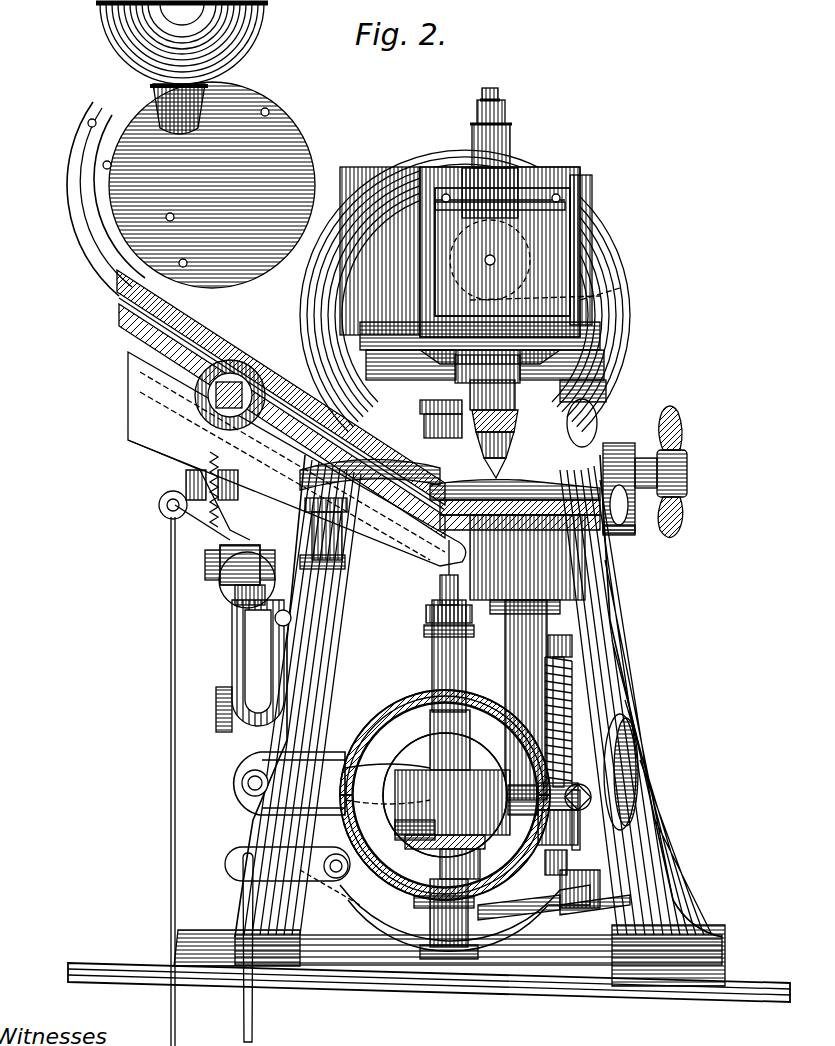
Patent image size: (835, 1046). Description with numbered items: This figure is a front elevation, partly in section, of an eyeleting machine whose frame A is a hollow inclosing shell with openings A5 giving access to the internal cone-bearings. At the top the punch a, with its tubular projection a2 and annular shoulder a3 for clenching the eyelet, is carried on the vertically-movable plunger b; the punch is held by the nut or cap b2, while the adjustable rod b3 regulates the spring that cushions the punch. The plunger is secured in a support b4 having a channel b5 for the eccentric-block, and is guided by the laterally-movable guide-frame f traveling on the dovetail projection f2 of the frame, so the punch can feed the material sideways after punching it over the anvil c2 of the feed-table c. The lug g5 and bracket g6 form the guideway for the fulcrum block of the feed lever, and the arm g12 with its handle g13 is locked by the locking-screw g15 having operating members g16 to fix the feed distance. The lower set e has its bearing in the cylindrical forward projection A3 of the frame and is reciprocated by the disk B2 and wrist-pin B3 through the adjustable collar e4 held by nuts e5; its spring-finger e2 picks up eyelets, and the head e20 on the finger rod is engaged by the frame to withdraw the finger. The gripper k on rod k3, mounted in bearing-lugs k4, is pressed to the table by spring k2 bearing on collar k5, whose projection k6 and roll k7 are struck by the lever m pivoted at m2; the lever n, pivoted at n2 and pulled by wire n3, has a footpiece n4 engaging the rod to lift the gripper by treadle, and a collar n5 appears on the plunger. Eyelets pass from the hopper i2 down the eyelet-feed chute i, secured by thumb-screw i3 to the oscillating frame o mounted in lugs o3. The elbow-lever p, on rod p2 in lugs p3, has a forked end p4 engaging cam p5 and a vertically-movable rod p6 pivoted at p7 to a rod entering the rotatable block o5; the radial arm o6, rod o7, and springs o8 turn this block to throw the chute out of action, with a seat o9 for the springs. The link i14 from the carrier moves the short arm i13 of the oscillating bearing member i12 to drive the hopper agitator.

The frame A is at (575, 362).
The forward projection of the frame A3 is at (405, 690).
The openings A5 is at (598, 420).
The hopper i2 is at (262, 122).
The eyelet-feed chute i is at (400, 556).
The thumb-screw i3 is at (200, 398).
The oscillating bearing member i12 is at (366, 568).
The projecting arm i13 is at (332, 518).
The link i14 is at (318, 505).
The guide-frame f is at (545, 185).
The dovetail projection f2 is at (357, 180).
The punch a is at (395, 180).
The tubular projection a2 is at (585, 238).
The annular shoulder a3 is at (611, 273).
The plunger b is at (510, 138).
The nut or cap b2 is at (500, 470).
The adjustable rod b3 is at (500, 112).
The support b4 is at (570, 222).
The channel b5 is at (605, 300).
The support or bracket g6 is at (455, 382).
The lug or projection g5 is at (585, 395).
The arm g12 is at (612, 460).
The handle g13 is at (628, 535).
The locking-screw g15 is at (676, 473).
The operating members g16 is at (680, 422).
The lever n is at (432, 428).
The pivot n2 is at (320, 866).
The wire n3 is at (262, 1022).
The footpiece n4 is at (610, 905).
The collar n5 is at (440, 406).
The feed-table c is at (575, 545).
The anvil c2 is at (432, 472).
The gripper k is at (500, 530).
The spring k2 is at (572, 668).
The rod k3 is at (572, 690).
The bearing-lugs k4 is at (572, 646).
The collar k5 is at (582, 782).
The projection k6 is at (566, 800).
The roll k7 is at (528, 790).
The disk B2 is at (470, 770).
The wrist-pin B3 is at (430, 848).
The lower set e is at (448, 600).
The spring-finger e2 is at (447, 580).
The collar e4 is at (420, 810).
The nuts e5 is at (430, 880).
The head e20 is at (450, 960).
The lever m is at (600, 838).
The pivot m2 is at (490, 920).
The oscillating frame o is at (195, 428).
The lugs o3 is at (220, 708).
The block o5 is at (212, 570).
The radial arm o6 is at (172, 512).
The rod o7 is at (170, 682).
The springs o8 is at (210, 460).
The spring seat o9 is at (218, 482).
The lever p is at (261, 676).
The rod p2 is at (245, 780).
The lugs p3 is at (232, 795).
The forked end p4 is at (345, 770).
The cam p5 is at (345, 798).
The vertically-movable rod p6 is at (262, 598).
The pivotal connection p7 is at (235, 592).